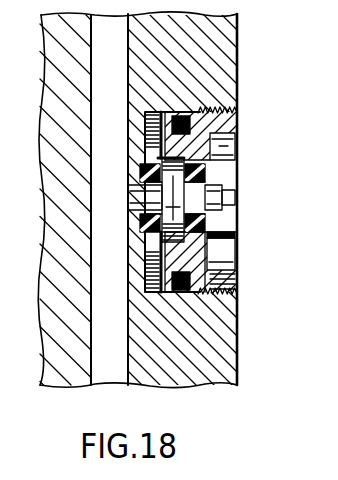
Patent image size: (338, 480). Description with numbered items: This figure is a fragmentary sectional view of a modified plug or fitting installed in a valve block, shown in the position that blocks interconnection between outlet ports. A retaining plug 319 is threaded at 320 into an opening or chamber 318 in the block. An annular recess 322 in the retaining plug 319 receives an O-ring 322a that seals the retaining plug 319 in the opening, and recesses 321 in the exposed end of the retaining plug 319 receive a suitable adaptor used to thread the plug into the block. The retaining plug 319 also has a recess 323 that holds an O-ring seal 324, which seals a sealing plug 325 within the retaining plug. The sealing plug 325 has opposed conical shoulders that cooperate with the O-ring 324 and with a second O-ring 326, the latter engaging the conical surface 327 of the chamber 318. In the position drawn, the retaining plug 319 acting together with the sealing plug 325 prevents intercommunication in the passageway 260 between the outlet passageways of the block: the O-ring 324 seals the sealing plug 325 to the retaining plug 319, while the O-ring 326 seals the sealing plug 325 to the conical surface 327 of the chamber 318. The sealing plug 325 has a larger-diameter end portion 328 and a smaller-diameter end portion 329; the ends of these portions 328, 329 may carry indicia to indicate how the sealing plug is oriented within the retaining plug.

The passageway 260 is at (128, 40).
The opening or chamber 318 is at (181, 294).
The retaining plug 319 is at (244, 121).
The threads 320 is at (230, 104).
The recesses 321 is at (232, 152).
The annular recess 322 is at (171, 110).
The O-ring 322a is at (180, 113).
The recess 323 is at (222, 266).
The O-ring seal 324 is at (233, 236).
The sealing plug 325 is at (228, 216).
The O-ring 326 is at (147, 167).
The conical surface 327 is at (143, 185).
The end portion 328 is at (140, 203).
The end portion 329 is at (238, 183).